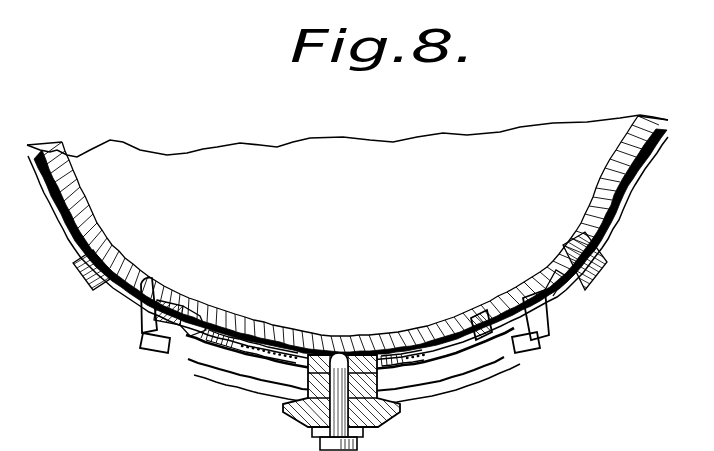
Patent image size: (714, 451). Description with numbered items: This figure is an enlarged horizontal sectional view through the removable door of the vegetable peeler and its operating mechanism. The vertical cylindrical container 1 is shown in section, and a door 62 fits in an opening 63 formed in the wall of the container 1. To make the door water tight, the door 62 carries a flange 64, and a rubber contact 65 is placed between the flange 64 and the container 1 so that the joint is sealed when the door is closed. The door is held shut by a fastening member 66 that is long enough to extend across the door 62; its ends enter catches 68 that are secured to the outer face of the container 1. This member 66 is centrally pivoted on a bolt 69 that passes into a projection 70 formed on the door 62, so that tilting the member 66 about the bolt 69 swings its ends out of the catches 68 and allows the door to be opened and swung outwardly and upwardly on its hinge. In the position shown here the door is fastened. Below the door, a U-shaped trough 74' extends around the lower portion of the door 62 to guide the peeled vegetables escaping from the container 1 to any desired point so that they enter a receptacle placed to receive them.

The container 1 is at (600, 208).
The door 62 is at (257, 338).
The opening 63 is at (473, 314).
The flange 64 is at (181, 337).
The rubber contact 65 is at (178, 343).
The member 66 is at (246, 396).
The catches 68 is at (532, 342).
The bolt 69 is at (374, 427).
The projection 70 is at (355, 361).
The U-shaped trough 74' is at (352, 352).